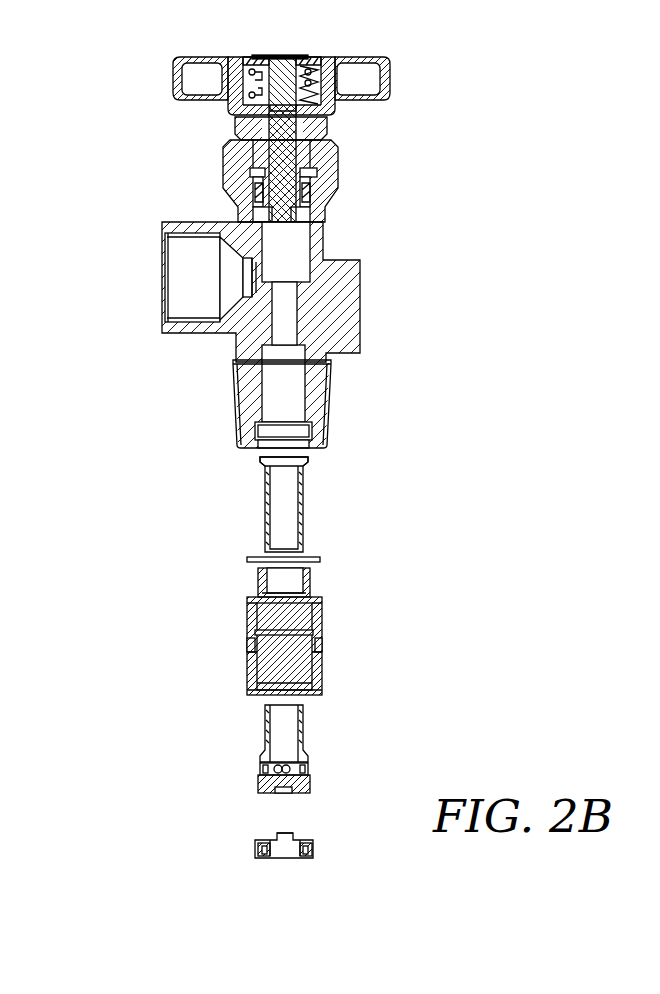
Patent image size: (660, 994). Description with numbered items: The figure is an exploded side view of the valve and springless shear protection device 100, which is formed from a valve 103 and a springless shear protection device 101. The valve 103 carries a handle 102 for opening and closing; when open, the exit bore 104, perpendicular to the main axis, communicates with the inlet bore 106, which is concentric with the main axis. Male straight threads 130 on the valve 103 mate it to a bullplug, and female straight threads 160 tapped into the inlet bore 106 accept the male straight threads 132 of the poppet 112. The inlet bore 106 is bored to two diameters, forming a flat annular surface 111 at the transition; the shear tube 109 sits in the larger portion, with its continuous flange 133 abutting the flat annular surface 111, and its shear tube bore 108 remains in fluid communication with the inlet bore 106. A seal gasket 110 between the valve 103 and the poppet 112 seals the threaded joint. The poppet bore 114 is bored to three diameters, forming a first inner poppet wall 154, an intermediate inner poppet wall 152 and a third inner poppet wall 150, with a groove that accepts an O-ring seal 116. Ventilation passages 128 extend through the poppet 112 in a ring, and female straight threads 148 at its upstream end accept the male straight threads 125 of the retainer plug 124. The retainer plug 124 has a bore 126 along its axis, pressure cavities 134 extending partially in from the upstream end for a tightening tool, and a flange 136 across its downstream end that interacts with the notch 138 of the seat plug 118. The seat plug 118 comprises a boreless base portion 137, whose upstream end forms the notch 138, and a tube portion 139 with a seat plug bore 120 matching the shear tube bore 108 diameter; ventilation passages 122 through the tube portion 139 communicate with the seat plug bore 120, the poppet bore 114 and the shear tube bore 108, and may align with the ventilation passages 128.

The valve and springless shear protection device 100 is at (462, 97).
The springless shear protection device 101 is at (480, 497).
The handle 102 is at (173, 87).
The valve 103 is at (392, 175).
The exit bore 104 is at (162, 283).
The inlet bore 106 is at (283, 316).
The shear tube bore 108 is at (287, 484).
The shear tube 109 is at (307, 515).
The seal gasket 110 is at (318, 560).
The flat annular surface 111 is at (278, 348).
The poppet 112 is at (325, 666).
The poppet bore 114 is at (272, 656).
The O-ring seal 116 is at (285, 630).
The seat plug 118 is at (307, 733).
The seat plug bore 120 is at (283, 735).
The ventilation passages 122 is at (308, 766).
The retainer plug 124 is at (315, 842).
The male straight threads 125 is at (256, 848).
The bore 126 is at (282, 856).
The ventilation passages 128 is at (250, 646).
The male straight threads 130 is at (332, 390).
The male straight threads 132 is at (260, 575).
The continuous flange 133 is at (262, 460).
The pressure cavities 134 is at (300, 857).
The flange 136 is at (278, 833).
The base portion 137 is at (263, 783).
The notch 138 is at (285, 791).
The tube portion 139 is at (265, 720).
The female straight threads 148 is at (318, 681).
The third inner poppet wall 150 is at (252, 664).
The intermediate inner poppet wall 152 is at (252, 604).
The first inner poppet wall 154 is at (308, 580).
The female straight threads 160 is at (323, 433).